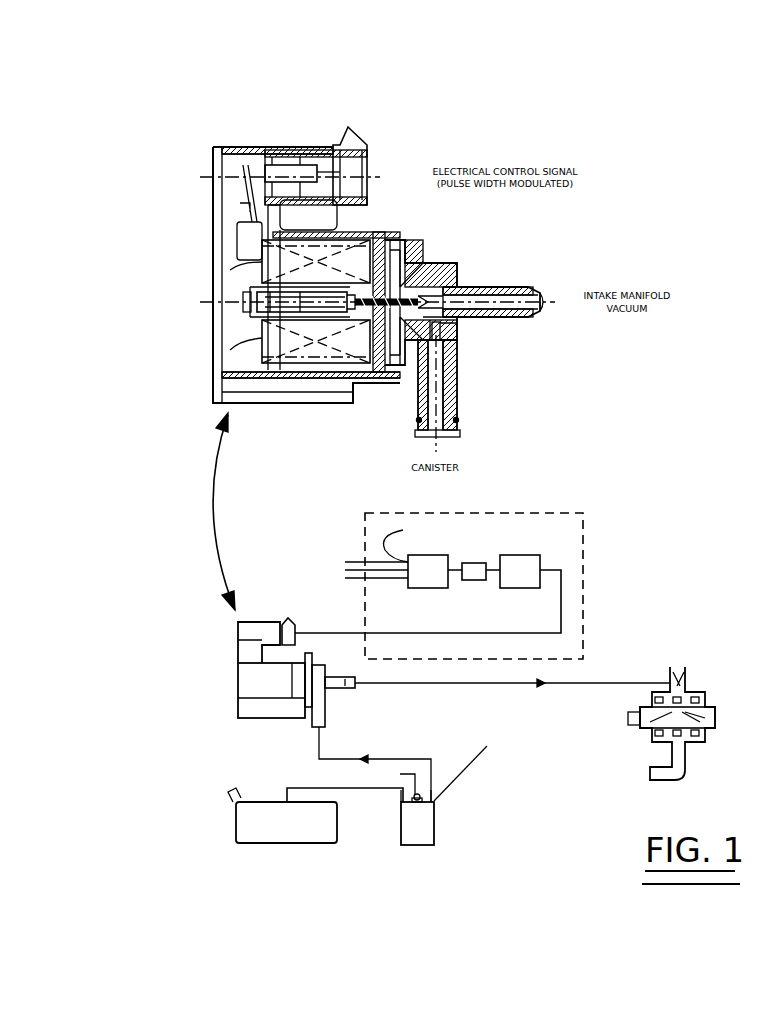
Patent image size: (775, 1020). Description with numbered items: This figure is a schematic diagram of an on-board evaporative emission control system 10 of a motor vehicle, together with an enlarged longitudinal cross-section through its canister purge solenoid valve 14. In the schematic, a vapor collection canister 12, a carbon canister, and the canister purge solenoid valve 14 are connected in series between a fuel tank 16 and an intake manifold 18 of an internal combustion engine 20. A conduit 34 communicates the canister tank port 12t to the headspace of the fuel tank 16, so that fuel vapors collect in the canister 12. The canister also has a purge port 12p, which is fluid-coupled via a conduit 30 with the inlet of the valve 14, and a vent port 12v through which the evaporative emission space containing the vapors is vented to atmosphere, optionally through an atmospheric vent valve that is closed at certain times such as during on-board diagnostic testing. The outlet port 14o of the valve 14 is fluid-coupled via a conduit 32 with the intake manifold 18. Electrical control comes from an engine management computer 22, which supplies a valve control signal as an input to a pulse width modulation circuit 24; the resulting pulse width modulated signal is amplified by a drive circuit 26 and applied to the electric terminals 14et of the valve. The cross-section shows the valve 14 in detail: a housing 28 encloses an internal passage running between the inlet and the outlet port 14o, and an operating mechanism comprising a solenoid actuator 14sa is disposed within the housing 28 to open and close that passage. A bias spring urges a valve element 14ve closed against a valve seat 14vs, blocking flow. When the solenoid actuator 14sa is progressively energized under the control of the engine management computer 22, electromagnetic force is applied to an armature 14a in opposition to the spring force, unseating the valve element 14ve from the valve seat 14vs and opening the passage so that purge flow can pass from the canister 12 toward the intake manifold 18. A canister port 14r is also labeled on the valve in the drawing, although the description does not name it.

The evaporative emission control system 10 is at (684, 546).
The vapor collection canister 12 is at (437, 820).
The purge port 12p is at (436, 800).
The canister tank port 12t is at (401, 804).
The vent port 12v is at (420, 795).
The canister purge solenoid valve 14 is at (238, 690).
The armature 14a is at (318, 308).
The electric terminals 14et is at (306, 168).
The solenoid actuator 14sa is at (383, 222).
The valve element 14ve is at (460, 288).
The valve seat 14vs is at (458, 326).
The outlet port 14o is at (532, 292).
The canister port 14r is at (455, 432).
The fuel tank 16 is at (338, 826).
The intake manifold 18 is at (707, 697).
The internal combustion engine 20 is at (717, 719).
The engine management computer 22 is at (424, 586).
The pulse width modulation circuit 24 is at (478, 581).
The drive circuit 26 is at (520, 589).
The housing 28 is at (457, 265).
The conduit 30 is at (405, 757).
The conduit 32 is at (535, 685).
The conduit 34 is at (287, 790).